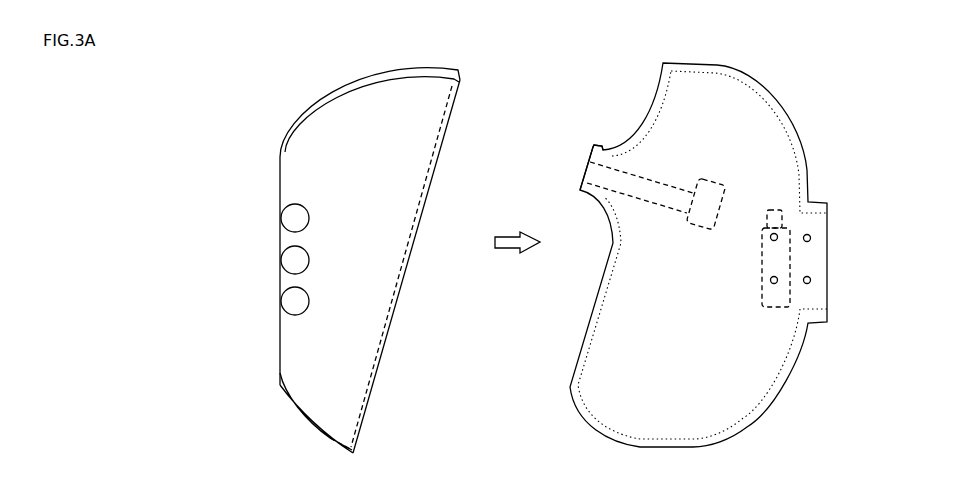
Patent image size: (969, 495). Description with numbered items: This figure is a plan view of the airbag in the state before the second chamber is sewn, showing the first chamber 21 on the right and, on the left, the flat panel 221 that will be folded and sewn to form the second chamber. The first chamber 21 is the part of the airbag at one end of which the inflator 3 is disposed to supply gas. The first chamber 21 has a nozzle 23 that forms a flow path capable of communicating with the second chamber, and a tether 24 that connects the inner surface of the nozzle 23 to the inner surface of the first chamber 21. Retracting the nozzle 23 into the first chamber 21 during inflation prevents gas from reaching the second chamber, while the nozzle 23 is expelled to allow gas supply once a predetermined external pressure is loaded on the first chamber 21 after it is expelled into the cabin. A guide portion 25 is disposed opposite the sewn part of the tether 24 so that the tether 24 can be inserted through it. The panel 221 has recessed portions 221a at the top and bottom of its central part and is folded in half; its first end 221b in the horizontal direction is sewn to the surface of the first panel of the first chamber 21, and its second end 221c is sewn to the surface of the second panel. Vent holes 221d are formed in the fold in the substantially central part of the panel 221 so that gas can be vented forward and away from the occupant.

The first chamber 21 is at (807, 81).
The nozzle 23 is at (594, 145).
The tether 24 is at (669, 178).
The guide portion 25 is at (718, 179).
The inflator 3 is at (761, 258).
The panel 221 is at (342, 238).
The recessed portions 221a is at (280, 157).
The first end 221b is at (422, 183).
The second end 221c is at (403, 298).
The vent holes 221d is at (281, 218).